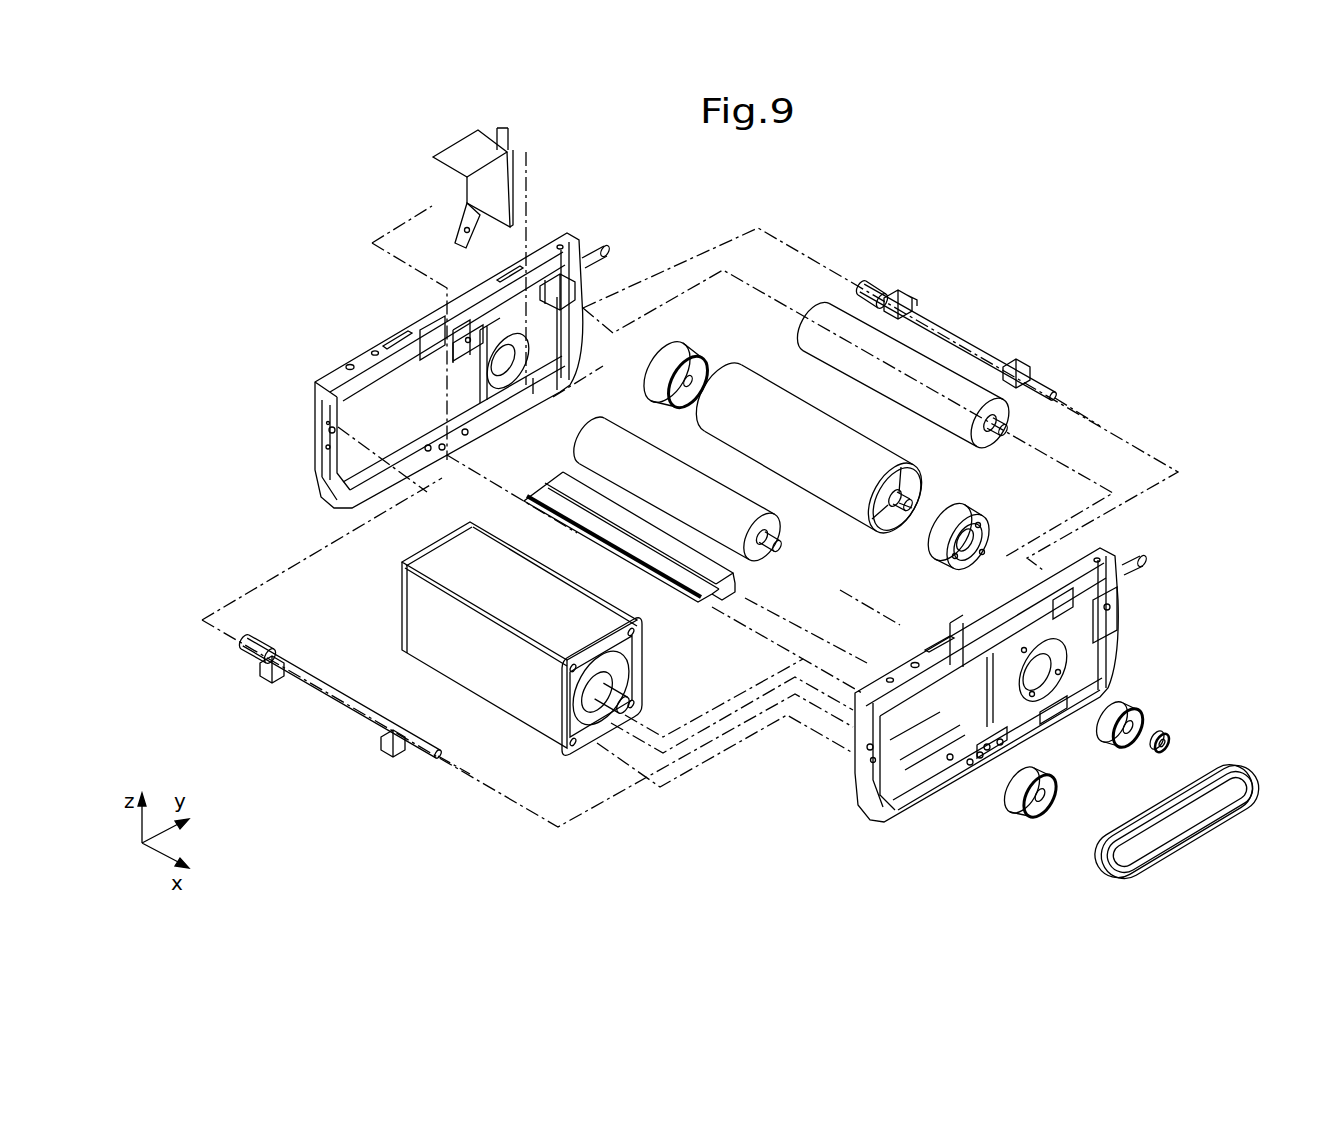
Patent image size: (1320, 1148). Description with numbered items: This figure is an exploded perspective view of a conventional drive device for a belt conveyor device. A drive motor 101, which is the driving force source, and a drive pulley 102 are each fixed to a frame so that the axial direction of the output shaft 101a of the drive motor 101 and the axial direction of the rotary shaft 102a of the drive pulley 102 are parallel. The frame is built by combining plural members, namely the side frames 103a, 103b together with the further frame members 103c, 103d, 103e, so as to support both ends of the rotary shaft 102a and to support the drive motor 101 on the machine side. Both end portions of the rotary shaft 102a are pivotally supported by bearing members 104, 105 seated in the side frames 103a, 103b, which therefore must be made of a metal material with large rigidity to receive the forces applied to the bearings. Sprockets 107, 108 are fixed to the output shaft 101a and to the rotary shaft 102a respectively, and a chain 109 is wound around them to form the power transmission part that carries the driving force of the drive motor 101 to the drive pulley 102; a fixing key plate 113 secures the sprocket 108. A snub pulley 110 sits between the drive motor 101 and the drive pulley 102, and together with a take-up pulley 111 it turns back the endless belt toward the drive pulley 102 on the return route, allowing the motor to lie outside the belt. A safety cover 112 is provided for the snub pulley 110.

The drive motor 101 is at (549, 638).
The output shaft 101a is at (618, 688).
The drive pulley 102 is at (814, 455).
The rotary shaft 102a is at (895, 535).
The side frame 103a is at (365, 360).
The side frame 103b is at (908, 800).
The frame member 103c is at (690, 575).
The frame member 103d is at (320, 690).
The frame member 103e is at (940, 338).
The bearing member 104 is at (678, 356).
The bearing member 105 is at (943, 513).
The sprocket 107 is at (1037, 820).
The sprocket 108 is at (1124, 752).
The chain 109 is at (1200, 840).
The snub pulley 110 is at (588, 447).
The take-up pulley 111 is at (868, 372).
The safety cover 112 is at (476, 187).
The fixing key plate 113 is at (1168, 742).